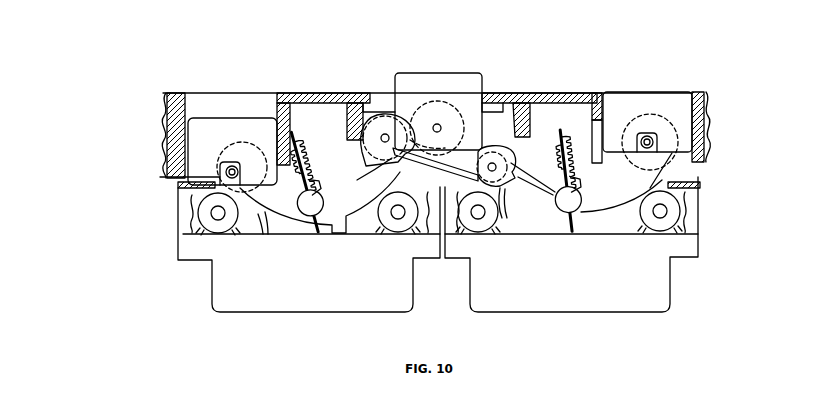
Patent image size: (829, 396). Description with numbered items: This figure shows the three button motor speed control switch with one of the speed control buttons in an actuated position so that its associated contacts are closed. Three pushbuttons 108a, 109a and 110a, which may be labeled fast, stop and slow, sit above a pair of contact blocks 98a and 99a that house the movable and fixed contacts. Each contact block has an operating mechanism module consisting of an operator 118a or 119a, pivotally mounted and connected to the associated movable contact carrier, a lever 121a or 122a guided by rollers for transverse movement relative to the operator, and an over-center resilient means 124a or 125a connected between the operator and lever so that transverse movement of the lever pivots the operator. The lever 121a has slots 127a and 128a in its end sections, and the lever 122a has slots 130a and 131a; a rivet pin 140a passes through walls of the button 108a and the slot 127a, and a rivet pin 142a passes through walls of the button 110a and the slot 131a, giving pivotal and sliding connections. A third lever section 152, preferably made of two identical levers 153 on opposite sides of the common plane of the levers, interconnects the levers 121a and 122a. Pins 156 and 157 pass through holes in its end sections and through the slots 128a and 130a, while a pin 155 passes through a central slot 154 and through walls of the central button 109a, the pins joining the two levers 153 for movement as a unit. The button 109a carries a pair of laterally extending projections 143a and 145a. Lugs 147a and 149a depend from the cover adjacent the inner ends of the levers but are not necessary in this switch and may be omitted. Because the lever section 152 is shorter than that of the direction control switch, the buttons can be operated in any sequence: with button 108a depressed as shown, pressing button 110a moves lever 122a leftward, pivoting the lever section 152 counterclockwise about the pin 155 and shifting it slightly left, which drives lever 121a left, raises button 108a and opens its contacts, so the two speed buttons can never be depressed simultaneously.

The contact block 98a is at (388, 306).
The contact block 99a is at (515, 303).
The pushbutton 108a is at (213, 118).
The pushbutton 109a is at (467, 73).
The pushbutton 110a is at (673, 97).
The operator 118a is at (285, 143).
The operator 119a is at (558, 137).
The lever 121a is at (272, 234).
The lever 122a is at (620, 212).
The over-center resilient means 124a is at (312, 152).
The over-center resilient means 125a is at (607, 178).
The slot 127a is at (246, 166).
The slot 128a is at (395, 180).
The slot 130a is at (512, 179).
The slot 131a is at (705, 156).
The rivet pin 140a is at (183, 174).
The rivet pin 142a is at (644, 136).
The laterally extending projection 143a is at (385, 102).
The laterally extending projection 145a is at (493, 103).
The lug 147a is at (360, 158).
The lug 149a is at (533, 122).
The third lever section 152 is at (505, 215).
The lever 153 is at (450, 163).
The slot 154 is at (455, 122).
The pin 155 is at (438, 124).
The pin 156 is at (392, 171).
The pin 157 is at (491, 162).